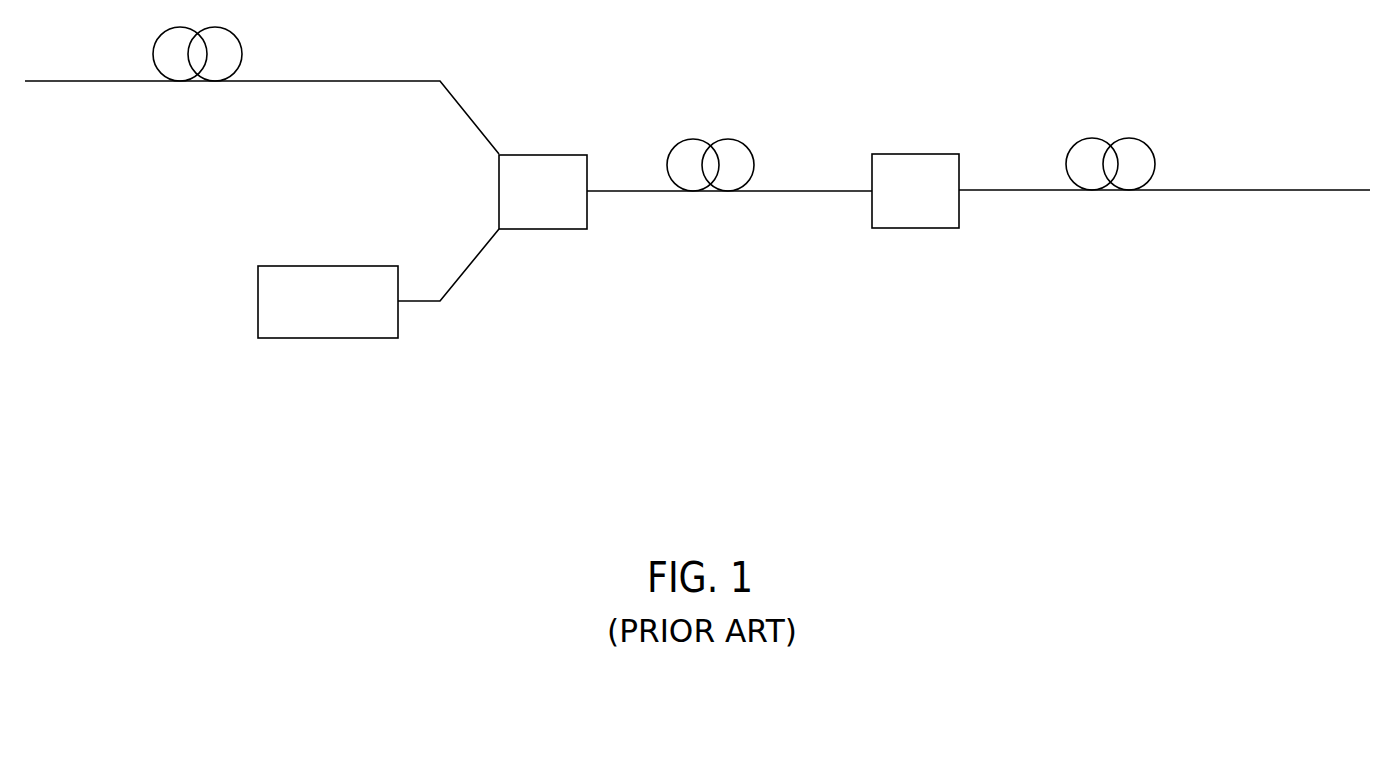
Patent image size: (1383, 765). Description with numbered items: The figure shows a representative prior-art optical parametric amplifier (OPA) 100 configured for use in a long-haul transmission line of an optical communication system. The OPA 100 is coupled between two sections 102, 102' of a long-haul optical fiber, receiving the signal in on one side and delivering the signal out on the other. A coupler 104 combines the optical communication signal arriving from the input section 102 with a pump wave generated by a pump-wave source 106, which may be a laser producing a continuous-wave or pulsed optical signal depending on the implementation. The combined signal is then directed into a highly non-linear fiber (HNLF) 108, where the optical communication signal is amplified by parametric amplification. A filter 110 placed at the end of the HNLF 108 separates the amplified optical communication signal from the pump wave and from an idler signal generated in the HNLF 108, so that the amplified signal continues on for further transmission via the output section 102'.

The optical parametric amplifier 100 is at (777, 340).
The section of long-haul optical fiber 102 is at (261, 82).
The section of long-haul optical fiber 102' is at (1164, 157).
The coupler 104 is at (552, 155).
The pump-wave source 106 is at (350, 266).
The highly non-linear fiber 108 is at (722, 139).
The filter 110 is at (922, 154).